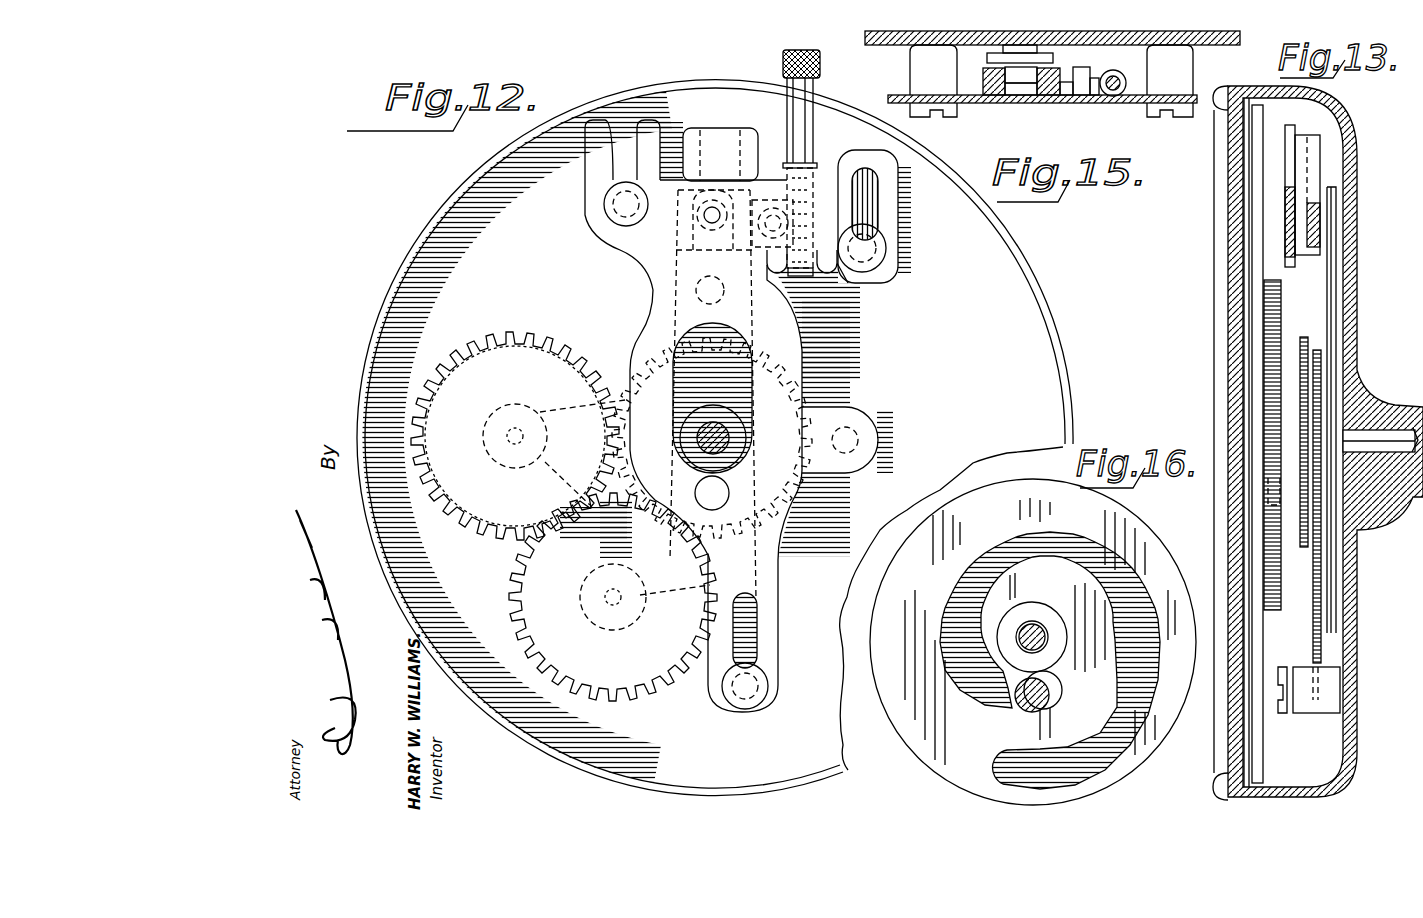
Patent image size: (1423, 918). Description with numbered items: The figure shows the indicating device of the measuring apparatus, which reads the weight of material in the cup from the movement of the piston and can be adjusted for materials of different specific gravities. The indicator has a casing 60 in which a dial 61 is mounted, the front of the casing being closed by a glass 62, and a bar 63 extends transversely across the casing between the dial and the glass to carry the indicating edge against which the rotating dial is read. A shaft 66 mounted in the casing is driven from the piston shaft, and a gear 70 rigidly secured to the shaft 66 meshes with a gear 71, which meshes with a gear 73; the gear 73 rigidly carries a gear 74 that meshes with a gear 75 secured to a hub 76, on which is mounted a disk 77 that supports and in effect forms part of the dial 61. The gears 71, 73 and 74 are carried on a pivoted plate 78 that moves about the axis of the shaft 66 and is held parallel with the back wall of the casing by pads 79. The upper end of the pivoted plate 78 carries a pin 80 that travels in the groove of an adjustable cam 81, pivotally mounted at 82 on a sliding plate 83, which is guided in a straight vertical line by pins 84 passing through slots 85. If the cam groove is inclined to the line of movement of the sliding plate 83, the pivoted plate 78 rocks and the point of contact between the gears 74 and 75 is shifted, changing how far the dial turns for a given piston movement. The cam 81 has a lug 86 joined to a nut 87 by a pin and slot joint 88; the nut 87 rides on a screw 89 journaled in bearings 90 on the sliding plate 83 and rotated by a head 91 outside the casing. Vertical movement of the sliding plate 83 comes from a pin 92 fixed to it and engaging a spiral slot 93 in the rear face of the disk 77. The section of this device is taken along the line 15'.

In FIG. 12, the section line 15' is at (742, 227).
In FIG. 15, the section line 15' is at (1042, 81).
In FIG. 12, the casing 60 is at (428, 250).
In FIG. 13, the casing 60 is at (1352, 262).
In FIG. 13, the dial 61 is at (1245, 372).
In FIG. 13, the glass 62 is at (1250, 405).
In FIG. 13, the bar 63 is at (1270, 490).
In FIG. 12, the shaft 66 is at (730, 440).
In FIG. 13, the shaft 66 is at (1388, 425).
In FIG. 16, the shaft 66 is at (1047, 634).
In FIG. 12, the gear 70 is at (726, 446).
In FIG. 13, the gear 70 is at (1322, 362).
In FIG. 12, the gear 71 is at (608, 690).
In FIG. 13, the gear 71 is at (1320, 650).
In FIG. 12, the gear 73 is at (472, 525).
In FIG. 12, the gear 74 is at (480, 345).
In FIG. 12, the gear 75 is at (652, 395).
In FIG. 13, the gear 75 is at (1302, 340).
In FIG. 12, the hub 76 is at (710, 420).
In FIG. 16, the hub 76 is at (1028, 612).
In FIG. 13, the disk 77 is at (1268, 316).
In FIG. 16, the disk 77 is at (1033, 642).
In FIG. 12, the pivoted plate 78 is at (605, 565).
In FIG. 15, the pivoted plate 78 is at (987, 58).
In FIG. 13, the pivoted plate 78 is at (1332, 330).
In FIG. 12, the projections or pads 79 is at (860, 425).
In FIG. 13, the projections or pads 79 is at (1338, 300).
In FIG. 12, the pin 80 is at (690, 236).
In FIG. 15, the pin 80 is at (1040, 95).
In FIG. 13, the pin 80 is at (1325, 218).
In FIG. 12, the adjustable cam 81 is at (722, 138).
In FIG. 15, the adjustable cam 81 is at (970, 100).
In FIG. 13, the adjustable cam 81 is at (1315, 173).
In FIG. 15, the pivot 82 is at (1015, 103).
In FIG. 12, the sliding plate 83 is at (652, 275).
In FIG. 15, the sliding plate 83 is at (990, 95).
In FIG. 12, the pins 84 is at (870, 255).
In FIG. 15, the pins 84 is at (1180, 112).
In FIG. 13, the pins 84 is at (1283, 713).
In FIG. 12, the slots 85 is at (868, 200).
In FIG. 12, the lug 86 is at (745, 172).
In FIG. 15, the lug 86 is at (1082, 96).
In FIG. 13, the lug 86 is at (1320, 233).
In FIG. 12, the nut 87 is at (808, 225).
In FIG. 15, the nut 87 is at (1097, 96).
In FIG. 12, the pin and slot joint 88 is at (765, 248).
In FIG. 15, the pin and slot joint 88 is at (1070, 96).
In FIG. 12, the screw 89 is at (828, 178).
In FIG. 15, the screw 89 is at (1126, 80).
In FIG. 12, the bearings 90 is at (832, 275).
In FIG. 12, the head 91 is at (782, 60).
In FIG. 12, the pin 92 is at (695, 490).
In FIG. 13, the pin 92 is at (1268, 518).
In FIG. 16, the pin 92 is at (1062, 686).
In FIG. 16, the spiral slot 93 is at (1010, 550).